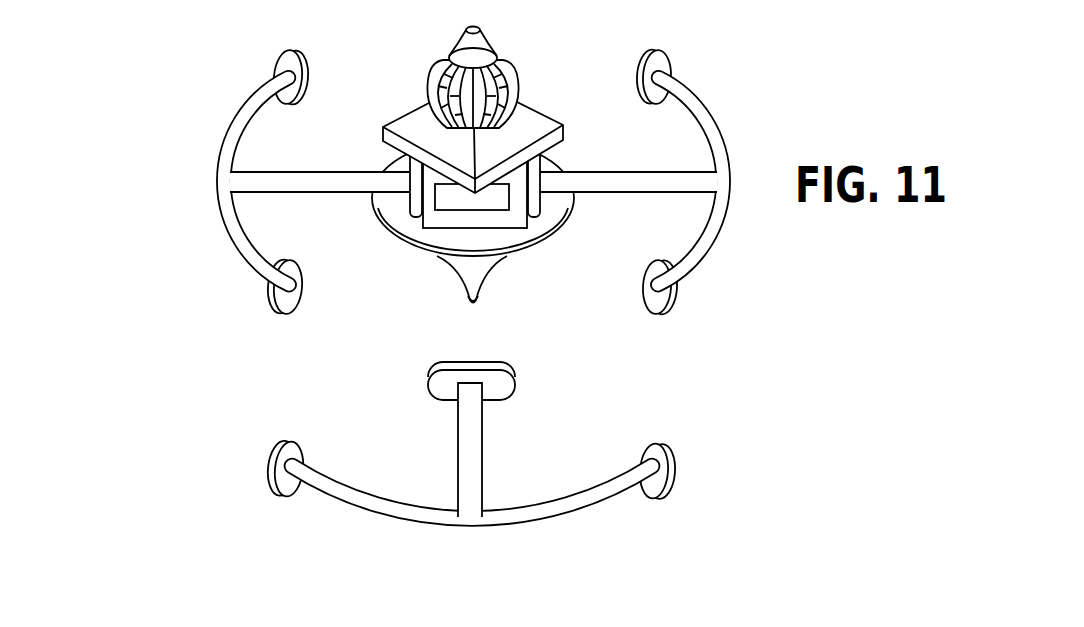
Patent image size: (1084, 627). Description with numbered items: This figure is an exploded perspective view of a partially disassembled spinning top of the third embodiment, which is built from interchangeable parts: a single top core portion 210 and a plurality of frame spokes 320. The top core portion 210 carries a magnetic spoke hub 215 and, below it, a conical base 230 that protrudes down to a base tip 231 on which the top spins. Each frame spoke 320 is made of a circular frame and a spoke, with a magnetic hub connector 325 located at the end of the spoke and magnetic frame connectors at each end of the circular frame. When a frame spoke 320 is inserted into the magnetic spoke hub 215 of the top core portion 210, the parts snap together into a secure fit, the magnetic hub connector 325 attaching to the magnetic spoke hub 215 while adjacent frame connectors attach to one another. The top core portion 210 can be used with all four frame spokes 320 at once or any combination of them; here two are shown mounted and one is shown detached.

The top core portion 210 is at (532, 64).
The magnetic spoke hub 215 is at (461, 202).
The conical base 230 is at (500, 273).
The base tip 231 is at (479, 306).
The frame spoke 320 is at (710, 112).
The magnetic hub connector 325 is at (424, 378).